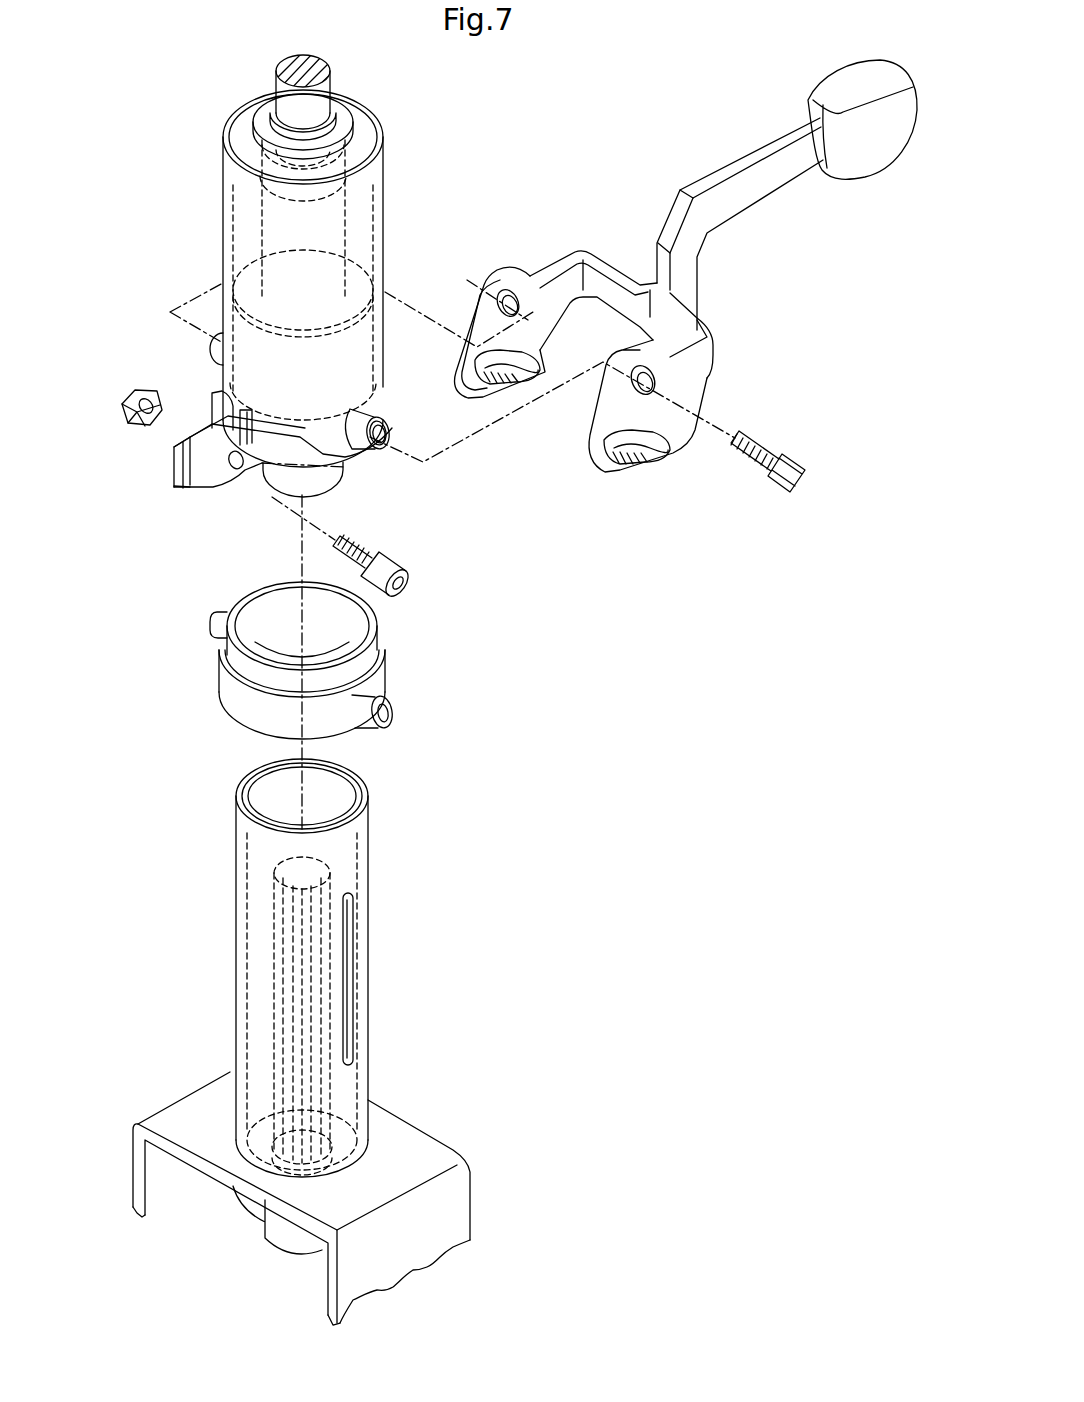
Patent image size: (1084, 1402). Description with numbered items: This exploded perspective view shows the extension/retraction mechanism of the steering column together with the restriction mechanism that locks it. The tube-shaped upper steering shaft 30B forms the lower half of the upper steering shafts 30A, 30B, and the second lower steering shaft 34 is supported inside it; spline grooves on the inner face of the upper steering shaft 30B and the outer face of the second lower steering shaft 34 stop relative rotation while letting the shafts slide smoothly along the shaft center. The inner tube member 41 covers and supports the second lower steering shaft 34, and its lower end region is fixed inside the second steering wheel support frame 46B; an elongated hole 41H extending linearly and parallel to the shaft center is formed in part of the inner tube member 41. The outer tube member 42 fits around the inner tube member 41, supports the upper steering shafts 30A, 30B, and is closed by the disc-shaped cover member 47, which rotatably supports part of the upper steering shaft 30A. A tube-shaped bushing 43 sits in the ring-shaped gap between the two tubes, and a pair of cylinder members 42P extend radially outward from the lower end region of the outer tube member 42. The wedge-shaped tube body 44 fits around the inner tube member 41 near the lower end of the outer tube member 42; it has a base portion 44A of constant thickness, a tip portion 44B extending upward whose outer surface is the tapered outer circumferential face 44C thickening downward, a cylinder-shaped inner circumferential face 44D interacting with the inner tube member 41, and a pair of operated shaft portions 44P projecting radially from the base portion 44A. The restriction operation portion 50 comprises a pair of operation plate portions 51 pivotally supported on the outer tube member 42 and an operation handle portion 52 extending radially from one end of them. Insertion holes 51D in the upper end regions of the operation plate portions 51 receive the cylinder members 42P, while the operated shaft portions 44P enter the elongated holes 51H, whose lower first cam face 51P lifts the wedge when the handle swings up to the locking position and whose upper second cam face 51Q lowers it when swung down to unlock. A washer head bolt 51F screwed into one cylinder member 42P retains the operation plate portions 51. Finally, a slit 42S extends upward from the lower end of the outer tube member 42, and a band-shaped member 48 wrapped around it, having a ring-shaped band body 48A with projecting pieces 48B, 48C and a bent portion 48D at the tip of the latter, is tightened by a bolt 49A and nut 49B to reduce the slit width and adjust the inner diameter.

The upper steering shaft 30A is at (332, 84).
The upper steering shaft 30B is at (262, 207).
The second lower steering shaft 34 is at (272, 978).
The inner tube member 41 is at (299, 968).
The elongated hole 41H is at (350, 987).
The outer tube member 42 is at (385, 206).
The cylinder members 42P is at (212, 350).
The slit 42S is at (217, 420).
The bushing 43 is at (449, 359).
The wedge-shaped tube body 44 is at (294, 662).
The base portion 44A is at (235, 703).
The tip portion 44B is at (373, 623).
The tapered outer circumferential face 44C is at (368, 657).
The cylinder-shaped inner circumferential face 44D is at (248, 623).
The operated shaft portions 44P is at (210, 615).
The second steering wheel support frame 46B is at (415, 1140).
The cover member 47 is at (243, 118).
The band-shaped member 48 is at (240, 489).
The band body 48A is at (290, 495).
The projecting piece 48B is at (172, 466).
The projecting piece 48C is at (238, 470).
The bent portion 48D is at (190, 487).
The bolt 49A is at (408, 567).
The nut 49B is at (126, 398).
The restriction operation portion 50 is at (787, 195).
The operation plate portions 51 is at (578, 371).
The insertion holes 51D is at (518, 287).
The washer head bolt 51F is at (793, 480).
The elongated hole 51H is at (523, 375).
The first cam face 51P is at (472, 368).
The second cam face 51Q is at (537, 355).
The operation handle portion 52 is at (778, 182).